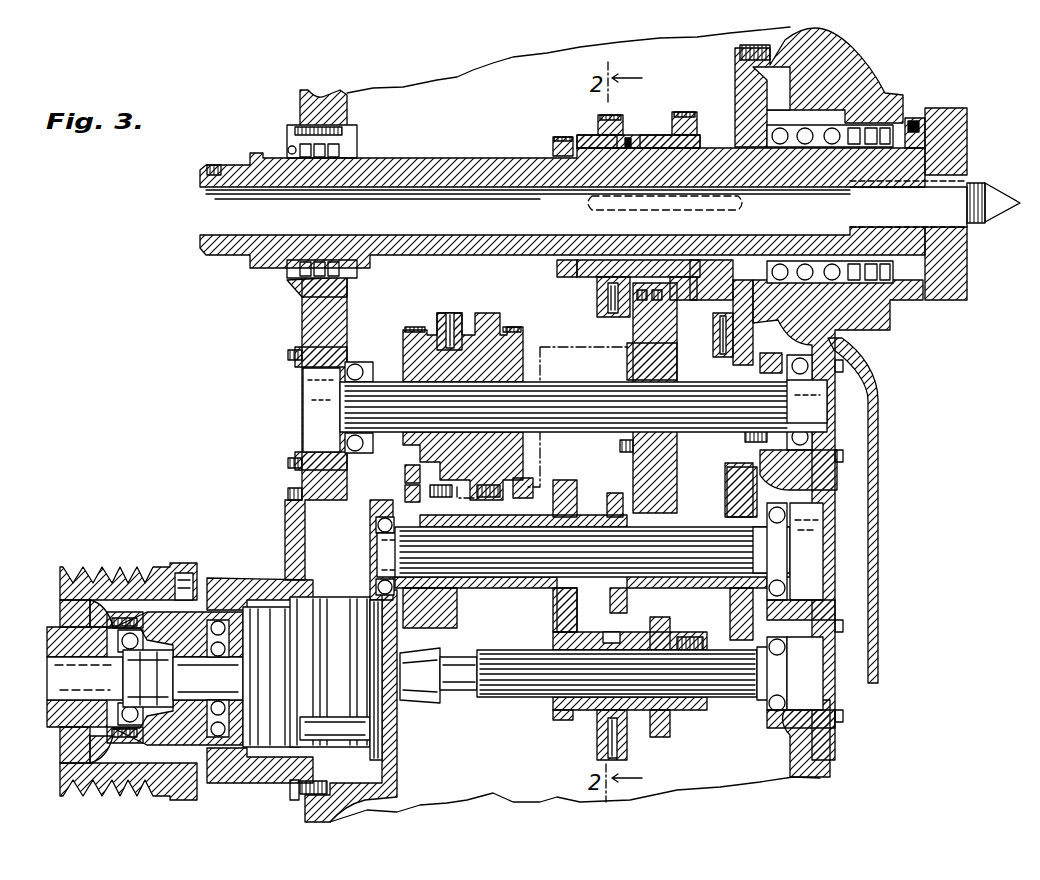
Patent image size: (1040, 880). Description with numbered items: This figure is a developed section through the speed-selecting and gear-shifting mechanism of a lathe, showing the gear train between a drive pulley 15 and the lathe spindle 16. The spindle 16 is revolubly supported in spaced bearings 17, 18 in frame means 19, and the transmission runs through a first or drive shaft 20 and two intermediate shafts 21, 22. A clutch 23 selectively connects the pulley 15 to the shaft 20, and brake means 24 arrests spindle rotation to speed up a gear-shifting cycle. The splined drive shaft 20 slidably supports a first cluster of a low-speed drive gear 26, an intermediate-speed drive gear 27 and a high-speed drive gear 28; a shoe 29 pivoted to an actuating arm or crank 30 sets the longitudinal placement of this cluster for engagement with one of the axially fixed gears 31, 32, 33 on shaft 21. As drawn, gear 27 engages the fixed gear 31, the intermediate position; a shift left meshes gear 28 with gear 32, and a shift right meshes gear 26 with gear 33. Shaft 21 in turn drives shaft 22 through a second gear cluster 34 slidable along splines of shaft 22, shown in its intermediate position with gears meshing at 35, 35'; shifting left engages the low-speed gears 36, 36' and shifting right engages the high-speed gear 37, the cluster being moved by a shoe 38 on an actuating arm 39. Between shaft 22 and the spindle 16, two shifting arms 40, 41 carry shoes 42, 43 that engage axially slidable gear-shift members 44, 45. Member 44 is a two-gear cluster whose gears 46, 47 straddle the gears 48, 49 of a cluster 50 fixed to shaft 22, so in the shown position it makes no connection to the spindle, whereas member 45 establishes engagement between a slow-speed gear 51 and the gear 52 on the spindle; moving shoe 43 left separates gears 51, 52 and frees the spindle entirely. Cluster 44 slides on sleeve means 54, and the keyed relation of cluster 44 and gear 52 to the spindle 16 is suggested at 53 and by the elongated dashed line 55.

The drive pulley 15 is at (85, 566).
The lathe spindle 16 is at (955, 152).
The bearing 17 is at (836, 122).
The bearing 18 is at (323, 164).
The frame means 19 is at (323, 98).
The drive shaft 20 is at (462, 690).
The intermediate shaft 21 is at (486, 580).
The second intermediate shaft 22 is at (552, 415).
The clutch 23 is at (296, 615).
The brake means 24 is at (340, 613).
The low-speed drive gear 26 is at (705, 638).
The intermediate-speed drive gear 27 is at (547, 715).
The high-speed drive gear 28 is at (680, 603).
The shoe 29 is at (597, 730).
The actuating arm 30 is at (593, 753).
The fixed gear 31 is at (548, 605).
The fixed gear 32 is at (628, 590).
The fixed gear 33 is at (742, 632).
The second gear cluster 34 is at (418, 378).
The intermediate-speed gear 35 is at (390, 487).
The intermediate-speed gear 35' is at (396, 466).
The low-speed gear 36 is at (454, 502).
The low-speed gear 36' is at (501, 502).
The high-speed gear 37 is at (532, 495).
The shoe 38 is at (463, 406).
The actuating arm 39 is at (447, 312).
The shifting arm 40 is at (542, 422).
The shifting arm 41 is at (726, 312).
The shoe 42 is at (598, 290).
The shoe 43 is at (720, 345).
The gear-shift member 44 is at (650, 133).
The gear-shift member 45 is at (720, 437).
The gear 46 is at (592, 128).
The gear 47 is at (702, 122).
The gear 48 is at (633, 270).
The gear 49 is at (685, 265).
The gear cluster 50 is at (665, 353).
The slow-speed gear 51 is at (755, 483).
The gear 52 is at (740, 60).
The keyed relation 53 is at (604, 156).
The sleeve means 54 is at (660, 150).
The elongated dashed line 55 is at (643, 205).